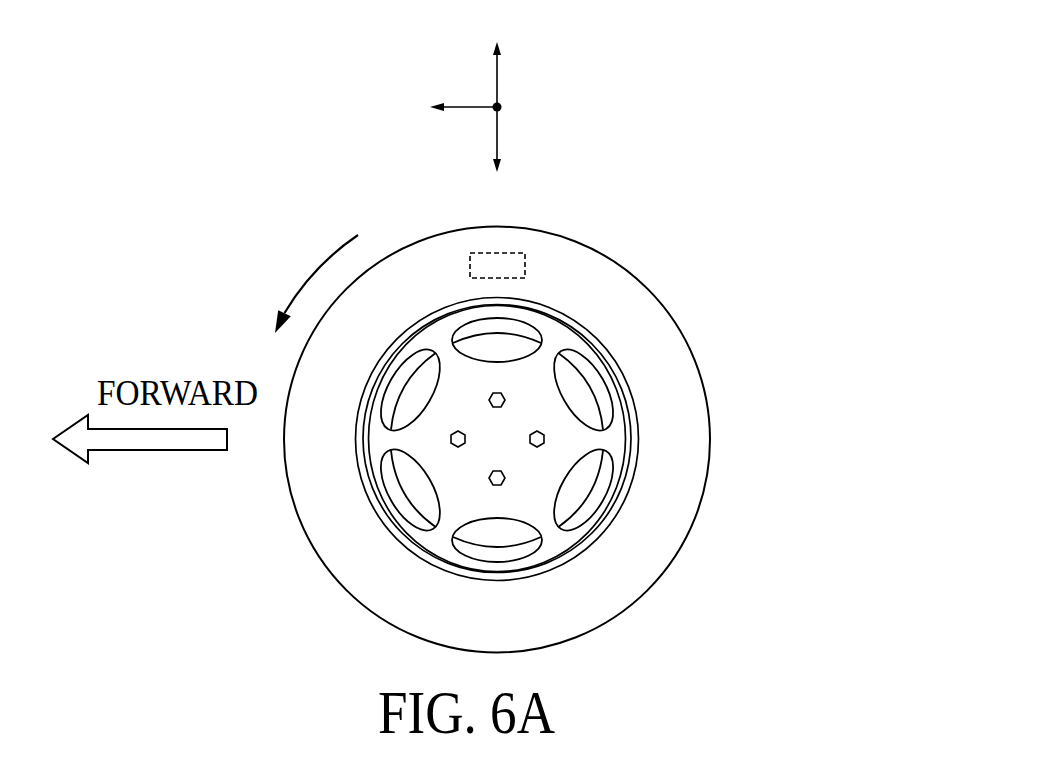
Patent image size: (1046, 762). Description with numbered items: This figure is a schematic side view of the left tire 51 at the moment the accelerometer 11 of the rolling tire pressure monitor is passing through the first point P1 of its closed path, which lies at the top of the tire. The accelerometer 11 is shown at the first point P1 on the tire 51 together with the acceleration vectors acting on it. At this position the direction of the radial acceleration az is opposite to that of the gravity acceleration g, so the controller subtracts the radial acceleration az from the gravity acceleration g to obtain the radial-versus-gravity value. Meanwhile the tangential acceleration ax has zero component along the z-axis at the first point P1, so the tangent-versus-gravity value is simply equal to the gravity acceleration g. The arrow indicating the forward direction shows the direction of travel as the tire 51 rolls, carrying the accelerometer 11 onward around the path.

The accelerometer 11 is at (530, 226).
The left tire 51 is at (633, 302).
The first point P1 is at (518, 267).
The tangential acceleration ax is at (442, 103).
The radial acceleration az is at (496, 53).
The gravity acceleration g is at (496, 155).